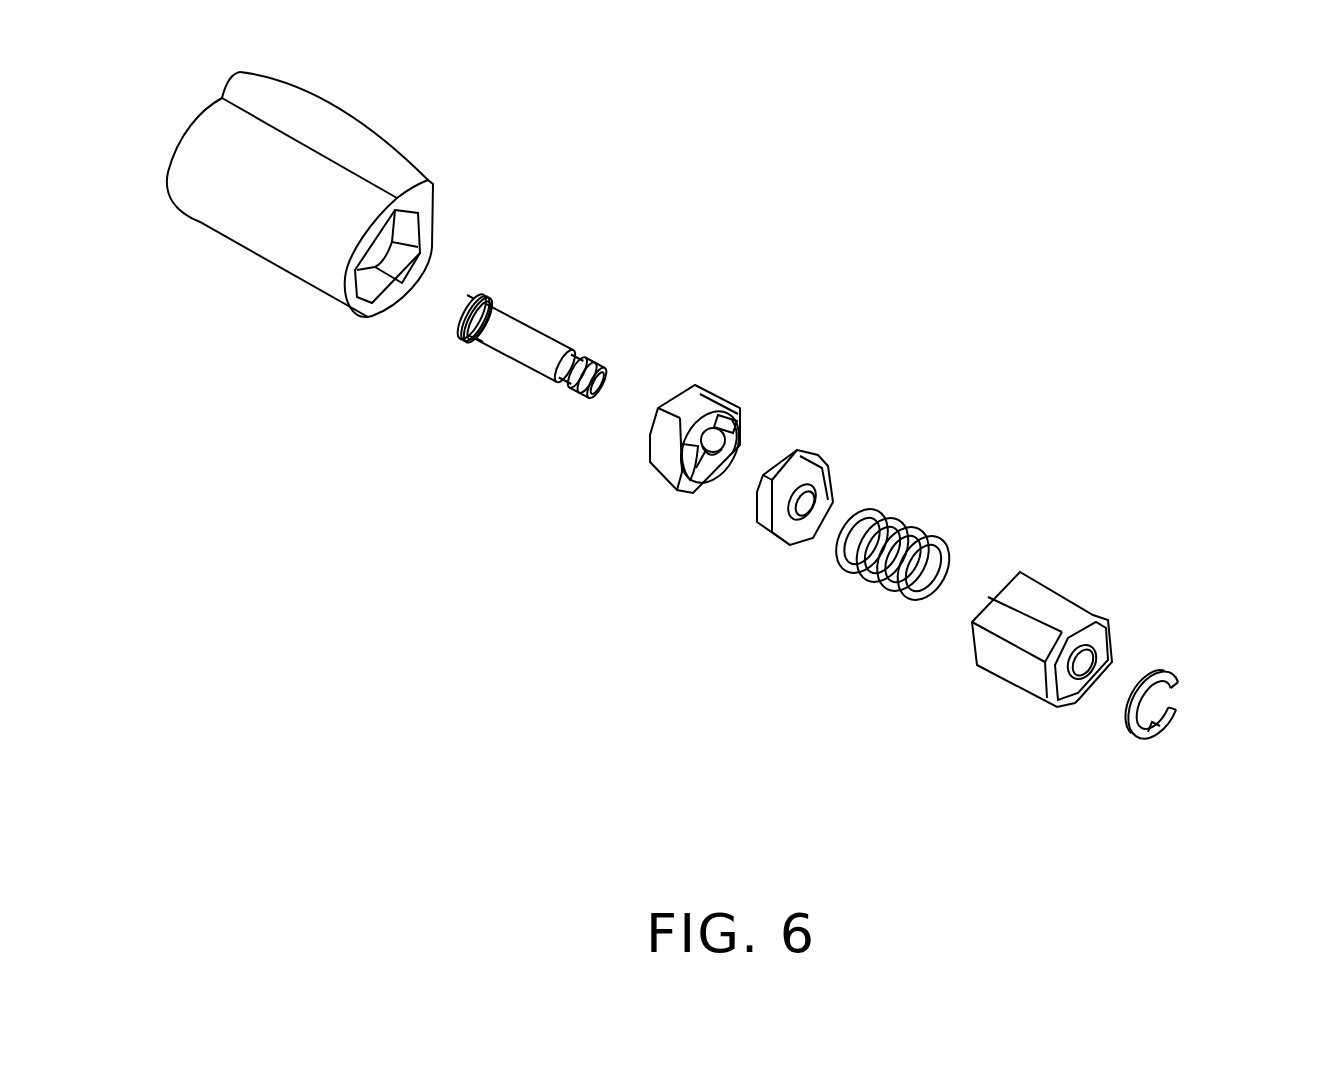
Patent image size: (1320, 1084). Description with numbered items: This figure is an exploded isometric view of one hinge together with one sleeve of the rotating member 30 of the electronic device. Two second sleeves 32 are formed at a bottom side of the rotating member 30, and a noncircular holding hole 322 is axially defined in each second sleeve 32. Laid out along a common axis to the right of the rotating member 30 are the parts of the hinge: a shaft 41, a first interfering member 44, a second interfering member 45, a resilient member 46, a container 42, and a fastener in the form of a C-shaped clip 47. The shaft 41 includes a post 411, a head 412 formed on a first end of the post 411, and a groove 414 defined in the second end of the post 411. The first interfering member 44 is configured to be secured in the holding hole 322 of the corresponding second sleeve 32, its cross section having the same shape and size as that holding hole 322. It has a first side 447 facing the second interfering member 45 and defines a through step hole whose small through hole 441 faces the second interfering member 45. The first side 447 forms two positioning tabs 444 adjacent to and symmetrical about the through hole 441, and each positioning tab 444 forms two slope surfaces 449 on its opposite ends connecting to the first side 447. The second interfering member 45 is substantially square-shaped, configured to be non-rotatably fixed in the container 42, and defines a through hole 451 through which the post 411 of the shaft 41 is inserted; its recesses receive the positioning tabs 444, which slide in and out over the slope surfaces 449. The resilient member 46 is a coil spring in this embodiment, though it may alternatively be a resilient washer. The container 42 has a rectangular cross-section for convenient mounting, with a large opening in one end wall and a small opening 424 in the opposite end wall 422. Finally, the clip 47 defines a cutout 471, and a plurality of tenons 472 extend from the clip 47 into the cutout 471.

The rotating member 30 is at (355, 153).
The second sleeve 32 is at (298, 223).
The holding hole 322 is at (405, 228).
The shaft 41 is at (551, 300).
The head 412 is at (470, 317).
The post 411 is at (507, 330).
The groove 414 is at (570, 378).
The first interfering member 44 is at (693, 400).
The first side 447 is at (717, 415).
The positioning tab 444 is at (738, 432).
The slope surface 449 is at (690, 452).
The through hole 441 is at (715, 457).
The second interfering member 45 is at (815, 473).
The through hole 451 is at (800, 500).
The resilient member 46 is at (898, 522).
The container 42 is at (1043, 603).
The end wall 422 is at (1063, 687).
The small opening 424 is at (1083, 657).
The C-shaped clip 47 is at (1178, 686).
The cutout 471 is at (1178, 710).
The tenon 472 is at (1150, 733).